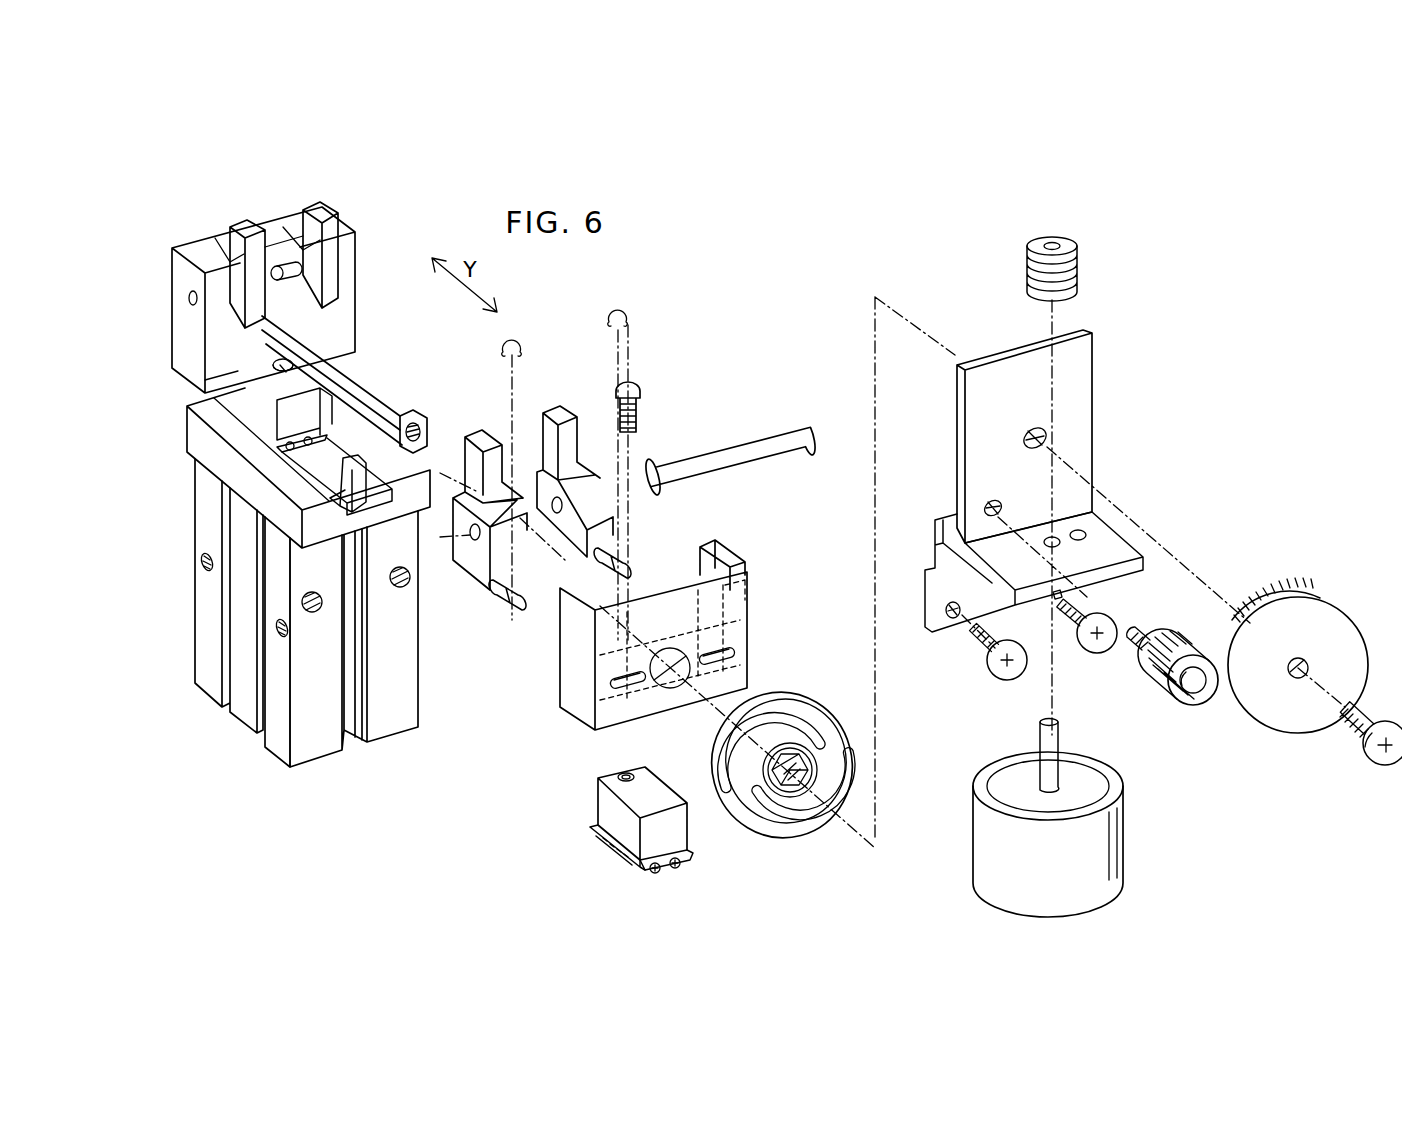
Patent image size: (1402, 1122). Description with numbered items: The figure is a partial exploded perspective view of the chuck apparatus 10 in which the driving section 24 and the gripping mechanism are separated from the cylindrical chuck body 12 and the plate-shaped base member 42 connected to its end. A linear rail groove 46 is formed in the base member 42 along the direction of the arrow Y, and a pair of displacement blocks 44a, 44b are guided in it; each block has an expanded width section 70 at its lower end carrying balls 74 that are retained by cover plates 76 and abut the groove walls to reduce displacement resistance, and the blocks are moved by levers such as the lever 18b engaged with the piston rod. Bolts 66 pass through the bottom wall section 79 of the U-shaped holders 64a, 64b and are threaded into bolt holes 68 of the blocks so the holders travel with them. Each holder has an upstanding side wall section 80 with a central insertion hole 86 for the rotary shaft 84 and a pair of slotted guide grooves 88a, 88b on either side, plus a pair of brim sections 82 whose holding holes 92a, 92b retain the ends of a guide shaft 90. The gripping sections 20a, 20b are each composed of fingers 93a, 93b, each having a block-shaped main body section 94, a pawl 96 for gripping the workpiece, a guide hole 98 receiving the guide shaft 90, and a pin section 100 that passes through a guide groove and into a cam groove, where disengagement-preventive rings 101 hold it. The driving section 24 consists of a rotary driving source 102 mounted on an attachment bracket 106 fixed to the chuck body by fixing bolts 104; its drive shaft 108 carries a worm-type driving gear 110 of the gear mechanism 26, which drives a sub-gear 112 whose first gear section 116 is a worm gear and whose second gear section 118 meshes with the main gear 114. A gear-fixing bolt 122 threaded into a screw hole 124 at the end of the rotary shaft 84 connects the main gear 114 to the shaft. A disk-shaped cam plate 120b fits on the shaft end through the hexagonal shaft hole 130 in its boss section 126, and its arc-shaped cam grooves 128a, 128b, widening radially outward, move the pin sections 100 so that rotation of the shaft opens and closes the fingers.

The chuck apparatus 10 is at (880, 225).
The chuck body 12 is at (201, 697).
The lever 18b is at (324, 500).
The gripping section 20a is at (470, 453).
The gripping section 20b is at (686, 603).
The driving section 24 is at (1042, 818).
The gear mechanism 26 is at (1138, 577).
The base member 42 is at (195, 441).
The displacement block 44a is at (259, 410).
The displacement block 44b is at (593, 801).
The rail groove 46 is at (378, 508).
The holder 64a is at (193, 229).
The holder 64b is at (720, 543).
The bolt 66 is at (285, 371).
The bolt hole 68 is at (620, 775).
The expanded width section 70 is at (617, 862).
The ball 74 is at (600, 848).
The cover plate 76 is at (665, 876).
The bottom wall section 79 is at (200, 388).
The side wall section 80 is at (215, 236).
The brim section 82 is at (188, 352).
The rotary shaft 84 is at (388, 400).
The insertion hole 86 is at (668, 650).
The guide groove 88a is at (610, 683).
The guide groove 88b is at (735, 657).
The guide shaft 90 is at (315, 262).
The holding hole 92a is at (189, 298).
The holding hole 92b is at (745, 582).
The finger 93a is at (172, 248).
The finger 93b is at (346, 228).
The main body section 94 is at (242, 315).
The pawl 96 is at (250, 221).
The guide hole 98 is at (553, 500).
The pin section 100 is at (510, 602).
The disengagement-preventive ring 101 is at (622, 308).
The rotary driving source 102 is at (985, 866).
The fixing bolt 104 is at (1006, 681).
The attachment bracket 106 is at (1085, 391).
The drive shaft 108 is at (1043, 740).
The driving gear 110 is at (1075, 265).
The sub-gear 112 is at (1163, 678).
The main gear 114 is at (1306, 608).
The first gear section 116 is at (1162, 692).
The second gear section 118 is at (1163, 640).
The cam plate 120b is at (810, 688).
The gear-fixing bolt 122 is at (1383, 765).
The screw hole 124 is at (406, 418).
The boss section 126 is at (762, 770).
The cam groove 128a is at (843, 790).
The cam groove 128b is at (733, 740).
The shaft hole 130 is at (793, 785).